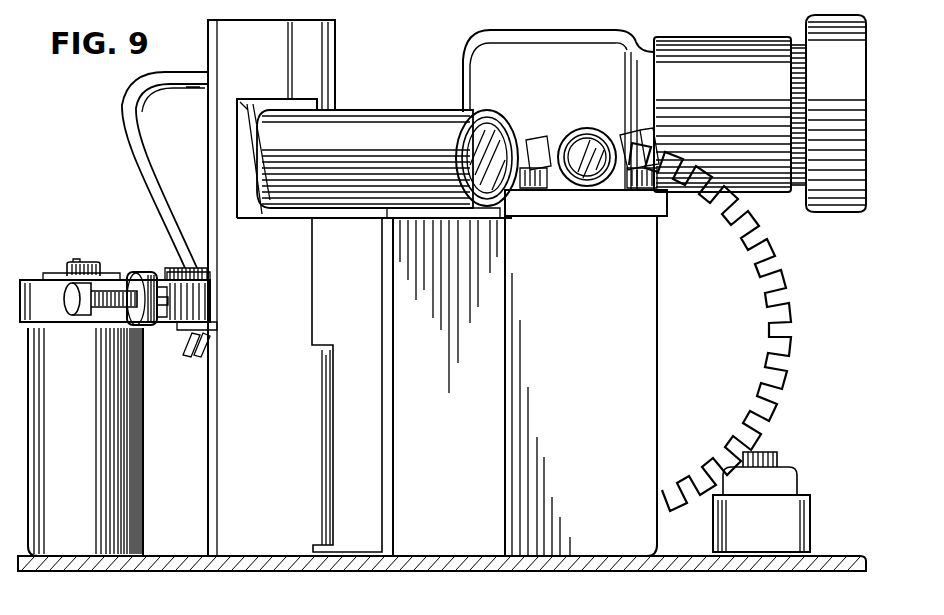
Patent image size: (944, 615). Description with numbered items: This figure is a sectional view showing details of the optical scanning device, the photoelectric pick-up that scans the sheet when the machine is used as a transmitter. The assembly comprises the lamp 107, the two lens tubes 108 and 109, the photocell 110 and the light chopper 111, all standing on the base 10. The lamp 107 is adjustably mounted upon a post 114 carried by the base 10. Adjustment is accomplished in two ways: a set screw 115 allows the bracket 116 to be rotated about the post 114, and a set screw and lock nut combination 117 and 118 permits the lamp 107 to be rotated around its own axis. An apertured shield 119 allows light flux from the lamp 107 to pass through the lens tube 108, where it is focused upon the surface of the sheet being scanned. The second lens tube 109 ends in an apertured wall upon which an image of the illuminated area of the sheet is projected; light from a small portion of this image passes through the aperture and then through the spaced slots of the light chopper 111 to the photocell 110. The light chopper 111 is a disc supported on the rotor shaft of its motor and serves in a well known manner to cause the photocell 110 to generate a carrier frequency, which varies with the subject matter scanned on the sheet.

The base 10 is at (556, 572).
The lamp 107 is at (133, 147).
The lens tube 108 is at (398, 108).
The lens tube 109 is at (592, 128).
The photocell 110 is at (476, 82).
The light chopper 111 is at (748, 352).
The post 114 is at (143, 523).
The set screw 115 is at (75, 262).
The bracket 116 is at (33, 280).
The set screw 117 is at (104, 291).
The lock nut 118 is at (152, 272).
The apertured shield 119 is at (322, 68).